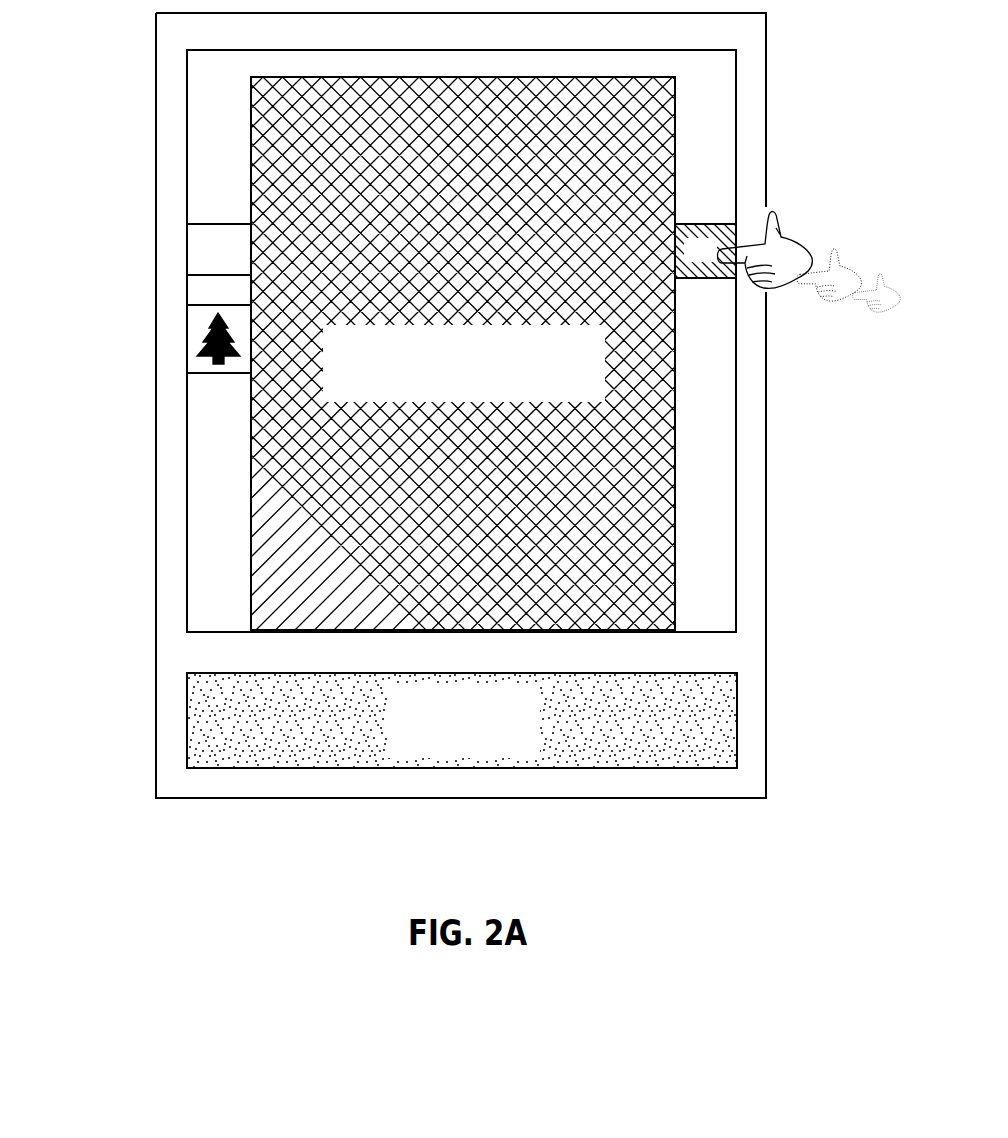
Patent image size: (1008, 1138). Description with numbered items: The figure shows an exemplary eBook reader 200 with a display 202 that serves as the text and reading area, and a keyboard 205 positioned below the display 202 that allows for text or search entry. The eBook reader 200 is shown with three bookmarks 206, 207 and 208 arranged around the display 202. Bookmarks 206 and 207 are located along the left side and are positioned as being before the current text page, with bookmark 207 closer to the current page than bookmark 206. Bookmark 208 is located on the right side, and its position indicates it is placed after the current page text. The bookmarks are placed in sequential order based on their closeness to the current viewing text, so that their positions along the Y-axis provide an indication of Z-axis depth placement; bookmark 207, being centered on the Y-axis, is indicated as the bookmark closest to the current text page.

The eBook reader 200 is at (766, 71).
The display 202 is at (487, 392).
The keyboard 205 is at (488, 752).
The bookmark 206 is at (193, 257).
The bookmark 207 is at (193, 337).
The bookmark 208 is at (723, 233).